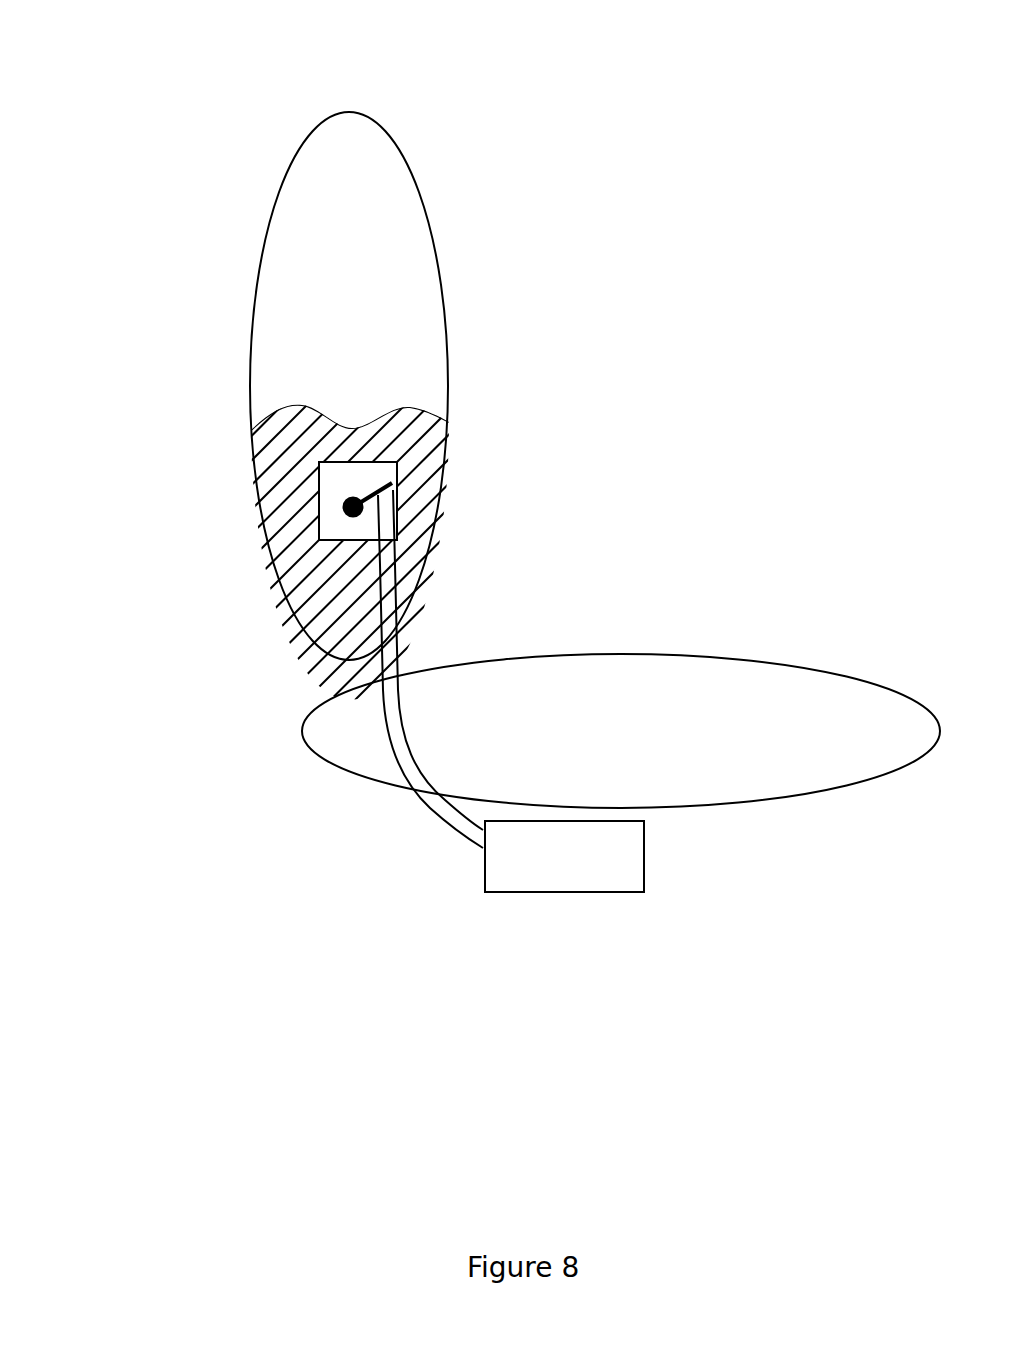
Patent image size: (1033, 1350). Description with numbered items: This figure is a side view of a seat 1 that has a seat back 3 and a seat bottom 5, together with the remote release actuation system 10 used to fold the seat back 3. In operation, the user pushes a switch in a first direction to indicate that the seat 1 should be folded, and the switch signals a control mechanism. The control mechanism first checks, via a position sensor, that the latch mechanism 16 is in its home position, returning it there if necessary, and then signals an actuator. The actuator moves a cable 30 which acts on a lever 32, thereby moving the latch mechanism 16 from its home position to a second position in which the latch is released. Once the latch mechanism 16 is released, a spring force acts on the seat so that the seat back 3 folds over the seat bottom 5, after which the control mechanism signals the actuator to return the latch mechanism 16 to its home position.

The seat 1 is at (135, 50).
The seat back 3 is at (283, 182).
The seat bottom 5 is at (722, 803).
The remote release actuation system 10 is at (610, 930).
The latch mechanism 16 is at (338, 460).
The cable 30 is at (397, 655).
The lever 32 is at (387, 487).